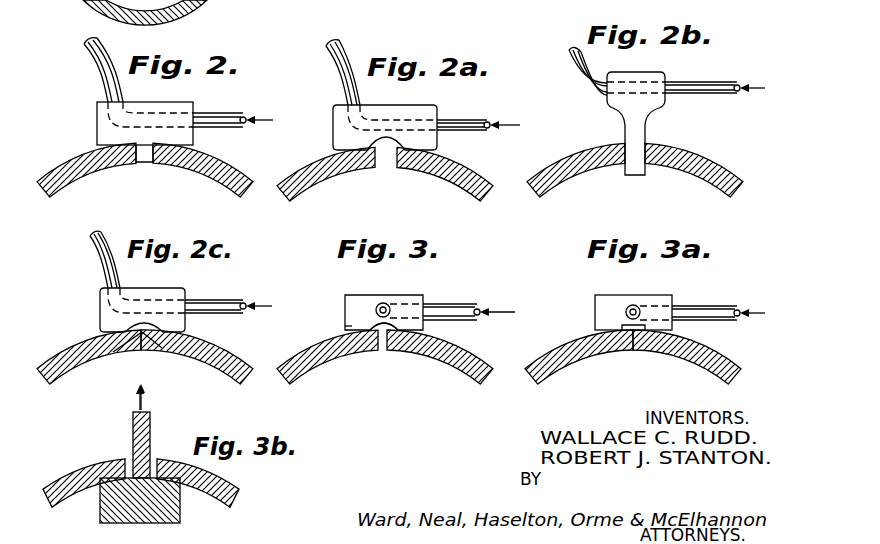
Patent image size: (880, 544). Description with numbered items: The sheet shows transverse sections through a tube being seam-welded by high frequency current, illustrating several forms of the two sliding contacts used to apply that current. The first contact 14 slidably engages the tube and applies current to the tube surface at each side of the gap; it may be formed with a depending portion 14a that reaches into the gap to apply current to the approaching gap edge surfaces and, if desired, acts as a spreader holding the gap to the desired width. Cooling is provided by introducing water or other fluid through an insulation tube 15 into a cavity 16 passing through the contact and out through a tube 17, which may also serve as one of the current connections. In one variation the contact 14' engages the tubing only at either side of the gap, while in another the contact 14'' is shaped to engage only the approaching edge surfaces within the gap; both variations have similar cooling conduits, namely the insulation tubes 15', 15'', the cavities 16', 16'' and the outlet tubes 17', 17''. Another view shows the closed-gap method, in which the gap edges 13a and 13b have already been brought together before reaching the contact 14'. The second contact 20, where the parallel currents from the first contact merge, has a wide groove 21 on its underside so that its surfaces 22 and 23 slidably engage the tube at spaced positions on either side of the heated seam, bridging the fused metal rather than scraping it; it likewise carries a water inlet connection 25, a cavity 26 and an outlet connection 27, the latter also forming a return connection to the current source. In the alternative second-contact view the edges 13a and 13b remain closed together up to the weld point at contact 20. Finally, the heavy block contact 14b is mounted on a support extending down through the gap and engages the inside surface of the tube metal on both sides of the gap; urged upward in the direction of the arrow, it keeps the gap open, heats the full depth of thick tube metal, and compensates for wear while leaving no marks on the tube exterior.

In FIG. 2A, the gap edge 13a is at (377, 168).
In FIG. 2C, the gap edge 13a is at (127, 356).
In FIG. 3A, the gap edge 13a is at (625, 356).
In FIG. 2A, the gap edge 13b is at (397, 169).
In FIG. 2C, the gap edge 13b is at (155, 356).
In FIG. 3A, the gap edge 13b is at (642, 356).
In FIG. 2, the contact 14 is at (161, 113).
In FIG. 2, the depending portion 14a is at (147, 164).
In FIG. 3B, the contact 14b is at (180, 518).
In FIG. 2A, the contact 14' is at (390, 114).
In FIG. 2C, the contact 14' is at (181, 281).
In FIG. 2B, the contact 14'' is at (653, 112).
In FIG. 2, the insulation tube 15 is at (233, 104).
In FIG. 2A, the insulation tube 15' is at (478, 104).
In FIG. 2B, the insulation tube 15'' is at (715, 71).
In FIG. 2, the cavity 16 is at (119, 117).
In FIG. 2A, the cavity 16' is at (366, 111).
In FIG. 2B, the cavity 16'' is at (613, 104).
In FIG. 2, the tube 17 is at (84, 70).
In FIG. 2A, the tube 17' is at (320, 72).
In FIG. 2B, the tube 17'' is at (571, 71).
In FIG. 3, the second contact 20 is at (362, 303).
In FIG. 3A, the second contact 20 is at (635, 295).
In FIG. 3, the groove 21 is at (370, 327).
In FIG. 3, the surface 22 is at (347, 329).
In FIG. 3, the surface 23 is at (418, 337).
In FIG. 3, the water inlet connection 25 is at (452, 306).
In FIG. 3, the cavity 26 is at (407, 304).
In FIG. 3, the outlet connection 27 is at (386, 303).